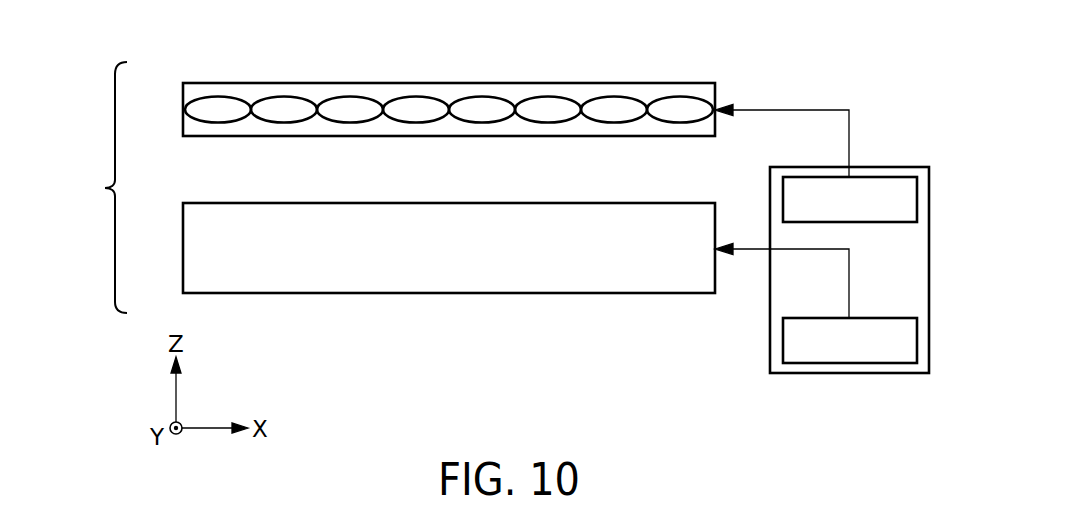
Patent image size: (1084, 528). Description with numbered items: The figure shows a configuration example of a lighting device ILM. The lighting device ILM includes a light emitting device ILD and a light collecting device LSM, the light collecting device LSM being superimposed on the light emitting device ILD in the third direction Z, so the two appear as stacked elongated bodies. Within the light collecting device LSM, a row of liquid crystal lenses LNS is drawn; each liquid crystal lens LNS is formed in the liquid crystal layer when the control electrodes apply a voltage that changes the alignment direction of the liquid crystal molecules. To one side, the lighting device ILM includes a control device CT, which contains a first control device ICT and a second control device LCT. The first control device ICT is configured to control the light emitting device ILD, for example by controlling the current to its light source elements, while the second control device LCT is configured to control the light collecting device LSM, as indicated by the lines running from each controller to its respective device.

The light collecting device LSM is at (183, 92).
The liquid crystal lens LNS is at (234, 97).
The light emitting device ILD is at (183, 250).
The lighting device ILM is at (95, 187).
The control device CT is at (870, 167).
The second control device LCT is at (903, 177).
The first control device ICT is at (905, 365).